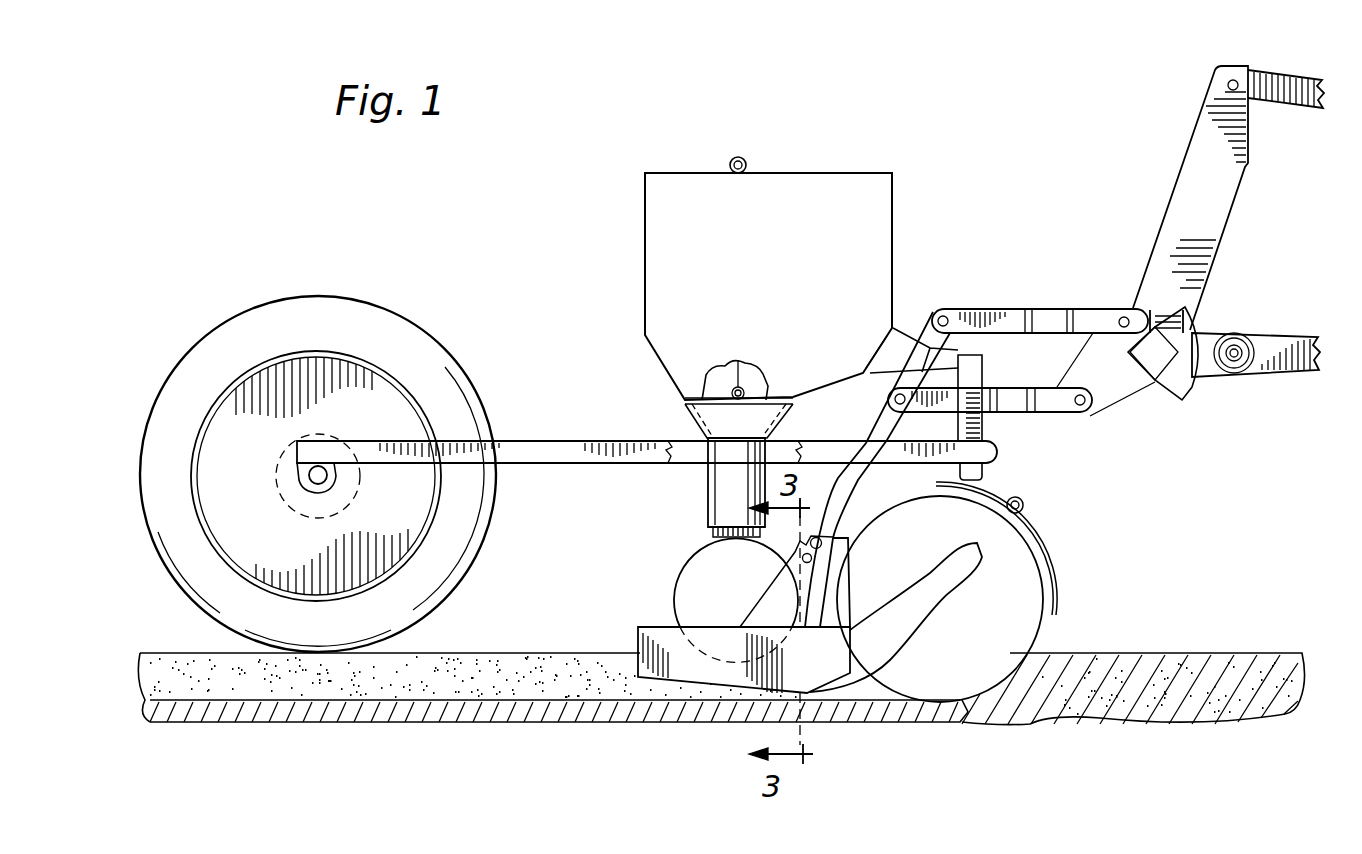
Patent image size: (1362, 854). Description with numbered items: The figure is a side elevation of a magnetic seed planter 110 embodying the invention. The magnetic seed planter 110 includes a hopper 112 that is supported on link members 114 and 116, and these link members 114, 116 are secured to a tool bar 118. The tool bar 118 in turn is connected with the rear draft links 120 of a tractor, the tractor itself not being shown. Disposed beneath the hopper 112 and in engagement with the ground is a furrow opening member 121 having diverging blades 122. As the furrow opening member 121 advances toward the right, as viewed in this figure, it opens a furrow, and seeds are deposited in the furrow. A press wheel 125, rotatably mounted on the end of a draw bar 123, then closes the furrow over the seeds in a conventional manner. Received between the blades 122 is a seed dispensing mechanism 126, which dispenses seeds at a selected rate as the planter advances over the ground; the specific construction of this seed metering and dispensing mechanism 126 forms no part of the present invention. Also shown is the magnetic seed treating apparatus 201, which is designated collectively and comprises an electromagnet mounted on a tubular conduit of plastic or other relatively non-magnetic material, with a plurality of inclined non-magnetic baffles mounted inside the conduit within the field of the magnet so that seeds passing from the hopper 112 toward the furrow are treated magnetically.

The magnetic seed planter 110 is at (910, 232).
The hopper 112 is at (640, 222).
The link member 114 is at (1062, 285).
The link member 116 is at (1058, 400).
The tool bar 118 is at (1142, 362).
The rear draft links 120 is at (1290, 95).
The furrow opening member 121 is at (975, 592).
The diverging blades 122 is at (637, 627).
The draw bar 123 is at (560, 400).
The press wheel 125 is at (443, 283).
The seed dispensing mechanism 126 is at (680, 578).
The magnetic seed treating apparatus 201 is at (680, 425).